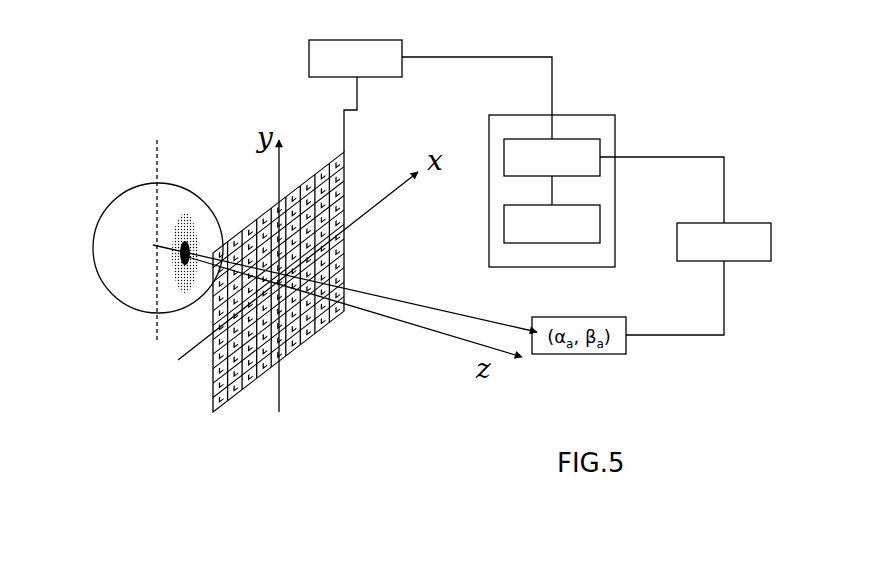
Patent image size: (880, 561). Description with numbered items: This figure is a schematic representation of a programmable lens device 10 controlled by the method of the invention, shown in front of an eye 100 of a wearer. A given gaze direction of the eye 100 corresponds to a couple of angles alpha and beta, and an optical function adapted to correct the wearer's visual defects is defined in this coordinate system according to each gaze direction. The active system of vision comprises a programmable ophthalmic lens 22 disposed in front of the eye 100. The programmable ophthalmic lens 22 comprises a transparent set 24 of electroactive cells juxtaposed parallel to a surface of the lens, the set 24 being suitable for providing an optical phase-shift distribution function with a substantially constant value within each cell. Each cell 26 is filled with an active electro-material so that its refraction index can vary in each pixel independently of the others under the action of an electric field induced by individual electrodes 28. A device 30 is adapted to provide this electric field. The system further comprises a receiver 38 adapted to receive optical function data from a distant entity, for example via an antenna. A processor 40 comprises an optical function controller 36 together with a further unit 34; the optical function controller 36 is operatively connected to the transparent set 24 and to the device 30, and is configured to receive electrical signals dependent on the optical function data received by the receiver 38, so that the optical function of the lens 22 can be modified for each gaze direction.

The eye tracking system 10 is at (652, 73).
The programmable ophthalmic lens 22 is at (278, 306).
The transparent set of electroactive cells 24 is at (347, 173).
The cell 26 is at (317, 332).
The individual electrodes 28 is at (225, 402).
The device adapted to provide the electric field 30 is at (355, 58).
The memory 34 is at (552, 224).
The optical function controller 36 is at (552, 157).
The receiver 38 is at (724, 242).
The processor 40 is at (489, 215).
The eye 100 is at (127, 222).